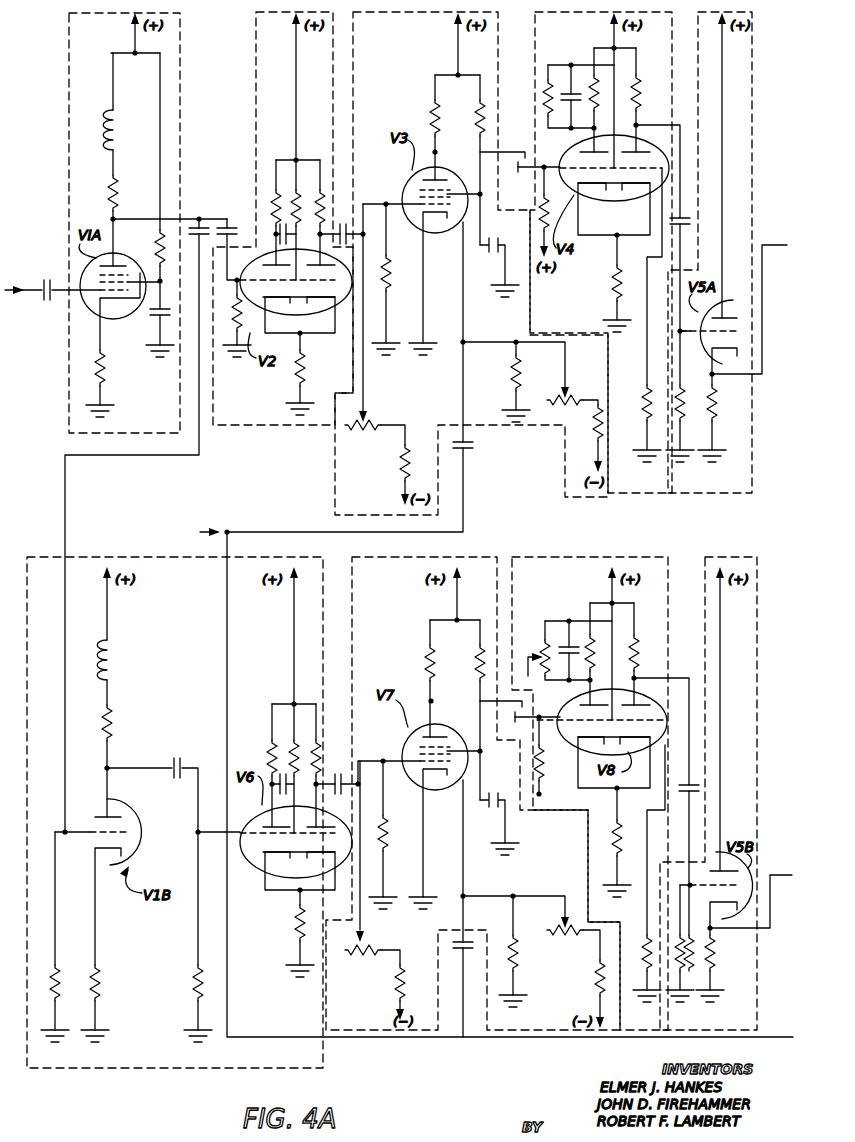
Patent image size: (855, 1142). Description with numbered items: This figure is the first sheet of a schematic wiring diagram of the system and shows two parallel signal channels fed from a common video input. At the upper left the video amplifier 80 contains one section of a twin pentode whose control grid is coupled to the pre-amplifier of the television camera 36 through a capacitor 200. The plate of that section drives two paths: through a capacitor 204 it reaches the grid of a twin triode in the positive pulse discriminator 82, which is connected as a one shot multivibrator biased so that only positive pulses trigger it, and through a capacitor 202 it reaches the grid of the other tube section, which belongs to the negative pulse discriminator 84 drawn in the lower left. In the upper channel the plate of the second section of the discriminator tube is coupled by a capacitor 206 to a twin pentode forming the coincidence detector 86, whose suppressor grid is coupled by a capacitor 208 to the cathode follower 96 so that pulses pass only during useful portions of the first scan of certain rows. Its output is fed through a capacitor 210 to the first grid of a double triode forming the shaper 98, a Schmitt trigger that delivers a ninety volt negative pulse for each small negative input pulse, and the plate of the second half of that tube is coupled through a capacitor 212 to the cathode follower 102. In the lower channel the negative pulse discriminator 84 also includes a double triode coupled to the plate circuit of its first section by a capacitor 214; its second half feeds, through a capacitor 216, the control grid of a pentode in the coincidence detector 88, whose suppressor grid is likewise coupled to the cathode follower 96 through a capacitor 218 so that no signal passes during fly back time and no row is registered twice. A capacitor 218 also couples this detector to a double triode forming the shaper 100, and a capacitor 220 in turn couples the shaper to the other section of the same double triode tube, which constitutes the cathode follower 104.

The television camera 36 is at (35, 325).
The video amplifier 80 is at (68, 420).
The positive pulse discriminator 82 is at (262, 433).
The negative pulse discriminator 84 is at (152, 1080).
The coincidence detector 86 is at (332, 472).
The coincidence detector 88 is at (503, 1042).
The cathode follower 96 is at (146, 538).
The shaper 98 is at (628, 500).
The shaper 100 is at (546, 552).
The cathode follower 102 is at (696, 500).
The cathode follower 104 is at (712, 552).
The capacitor 200 is at (55, 282).
The capacitor 202 is at (196, 216).
The capacitor 204 is at (246, 203).
The capacitor 206 is at (348, 228).
The capacitor 208 is at (478, 443).
The capacitor 210 is at (520, 164).
The capacitor 212 is at (686, 226).
The capacitor 214 is at (177, 760).
The capacitor 216 is at (342, 778).
The capacitor 218 is at (465, 936).
The capacitor 220 is at (696, 784).